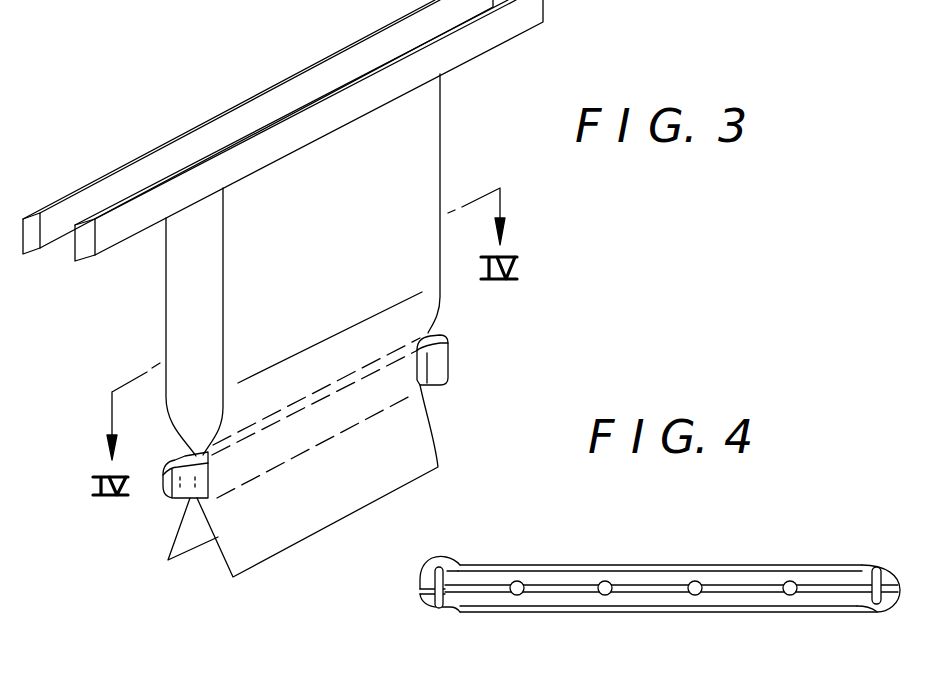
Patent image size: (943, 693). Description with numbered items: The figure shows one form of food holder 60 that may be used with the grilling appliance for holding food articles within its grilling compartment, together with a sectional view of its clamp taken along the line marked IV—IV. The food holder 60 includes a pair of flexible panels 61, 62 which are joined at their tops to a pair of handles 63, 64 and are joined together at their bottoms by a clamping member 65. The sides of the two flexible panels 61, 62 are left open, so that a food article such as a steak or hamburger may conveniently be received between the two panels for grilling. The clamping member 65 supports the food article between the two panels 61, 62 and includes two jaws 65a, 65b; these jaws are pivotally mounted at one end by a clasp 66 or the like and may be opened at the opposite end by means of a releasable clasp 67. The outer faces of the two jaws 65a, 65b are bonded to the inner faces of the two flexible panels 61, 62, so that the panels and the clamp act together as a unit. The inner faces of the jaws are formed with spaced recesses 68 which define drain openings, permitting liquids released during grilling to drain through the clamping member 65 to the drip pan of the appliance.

In FIG. 3, the food holder 60 is at (145, 120).
In FIG. 3, the flexible panel 61 is at (168, 267).
In FIG. 4, the flexible panel 61 is at (768, 565).
In FIG. 3, the flexible panel 62 is at (233, 297).
In FIG. 4, the flexible panel 62 is at (810, 610).
In FIG. 3, the handle 63 is at (263, 100).
In FIG. 3, the handle 64 is at (352, 92).
In FIG. 3, the clamping member 65 is at (160, 500).
In FIG. 4, the clamping member 65 is at (503, 556).
In FIG. 4, the jaw 65a is at (567, 572).
In FIG. 4, the jaw 65b is at (565, 602).
In FIG. 4, the clasp 66 is at (860, 565).
In FIG. 4, the releasable clasp 67 is at (420, 605).
In FIG. 4, the spaced recesses 68 is at (695, 580).